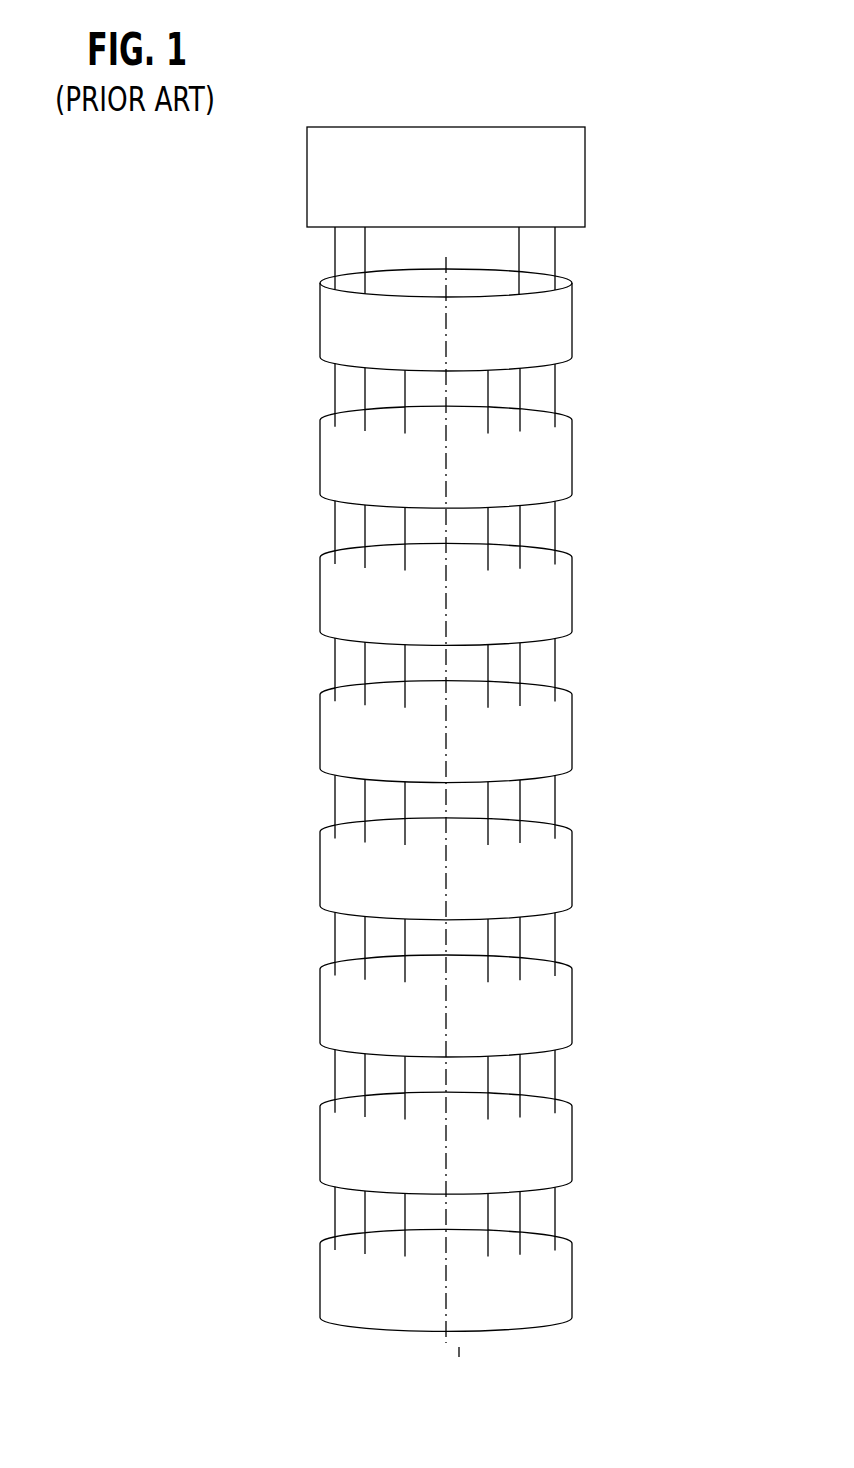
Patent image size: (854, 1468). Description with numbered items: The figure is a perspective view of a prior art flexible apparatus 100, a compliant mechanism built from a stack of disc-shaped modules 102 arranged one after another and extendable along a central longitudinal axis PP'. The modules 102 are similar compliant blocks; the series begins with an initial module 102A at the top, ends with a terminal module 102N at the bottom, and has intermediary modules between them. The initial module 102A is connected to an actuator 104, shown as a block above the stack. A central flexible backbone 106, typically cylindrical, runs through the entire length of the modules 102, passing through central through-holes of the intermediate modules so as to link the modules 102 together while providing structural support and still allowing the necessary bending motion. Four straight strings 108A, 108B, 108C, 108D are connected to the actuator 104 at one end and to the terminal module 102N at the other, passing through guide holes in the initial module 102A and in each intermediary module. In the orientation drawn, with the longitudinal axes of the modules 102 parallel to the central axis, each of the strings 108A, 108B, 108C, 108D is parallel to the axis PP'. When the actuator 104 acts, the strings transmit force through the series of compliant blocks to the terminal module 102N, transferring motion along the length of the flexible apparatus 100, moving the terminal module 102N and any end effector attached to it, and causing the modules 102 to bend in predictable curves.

The flexible apparatus 100 is at (622, 82).
The disc-shaped modules 102 is at (572, 733).
The initial module 102A is at (572, 318).
The terminal module 102N is at (572, 1273).
The actuator 104 is at (469, 190).
The central flexible backbone 106 is at (405, 838).
The straight string 108A is at (365, 432).
The straight string 108B is at (343, 414).
The straight string 108C is at (555, 408).
The straight string 108D is at (518, 430).